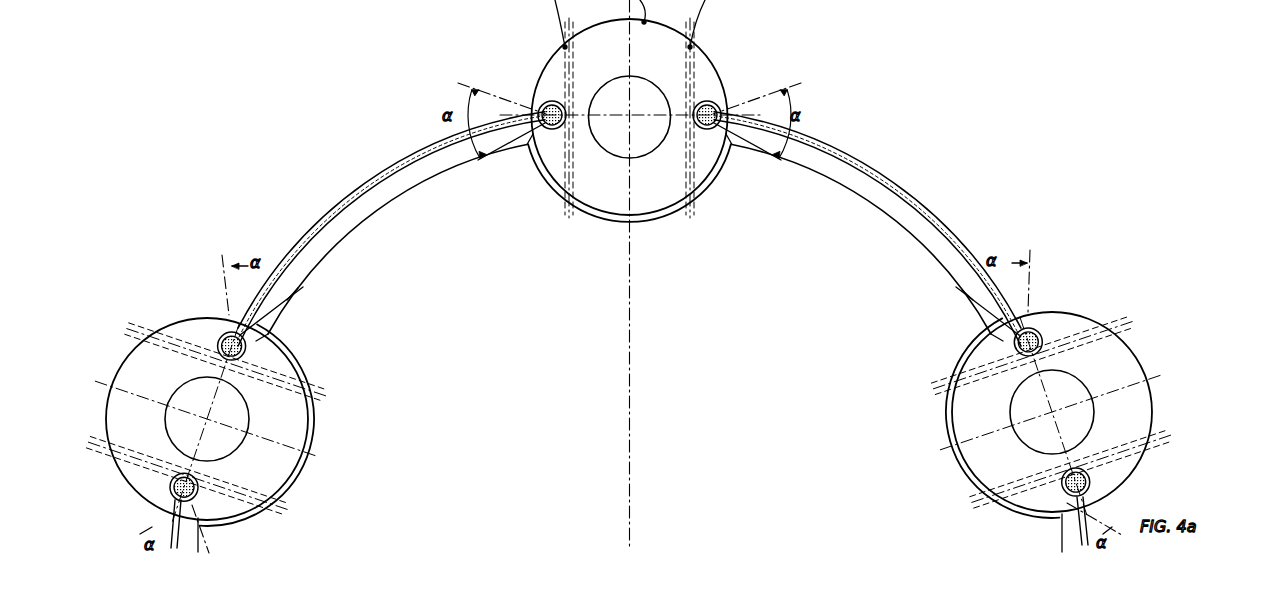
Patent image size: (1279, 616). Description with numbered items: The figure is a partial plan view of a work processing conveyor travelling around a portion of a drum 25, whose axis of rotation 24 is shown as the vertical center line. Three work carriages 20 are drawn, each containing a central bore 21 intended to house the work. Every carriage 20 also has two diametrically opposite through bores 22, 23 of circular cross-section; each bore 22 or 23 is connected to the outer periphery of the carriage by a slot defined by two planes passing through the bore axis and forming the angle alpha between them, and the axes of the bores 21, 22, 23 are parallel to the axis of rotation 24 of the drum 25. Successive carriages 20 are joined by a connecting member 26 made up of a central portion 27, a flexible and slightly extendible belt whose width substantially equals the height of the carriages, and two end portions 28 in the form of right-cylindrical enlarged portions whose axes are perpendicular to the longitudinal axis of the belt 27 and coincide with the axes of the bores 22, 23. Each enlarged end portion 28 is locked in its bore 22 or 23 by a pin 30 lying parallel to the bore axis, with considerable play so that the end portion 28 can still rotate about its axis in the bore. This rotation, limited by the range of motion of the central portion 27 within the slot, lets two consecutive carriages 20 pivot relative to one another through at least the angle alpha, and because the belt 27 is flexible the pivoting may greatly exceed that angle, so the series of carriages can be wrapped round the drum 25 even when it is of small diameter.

The work carriage 20 is at (288, 403).
The central bore 21 is at (629, 415).
The through bore 22 is at (548, 103).
The through bore 23 is at (715, 104).
The axis of rotation 24 is at (636, 540).
The drum 25 is at (773, 301).
The connecting member 26 is at (317, 165).
The central portion 27 is at (353, 197).
The end portion 28 is at (545, 128).
The pin 30 is at (158, 340).